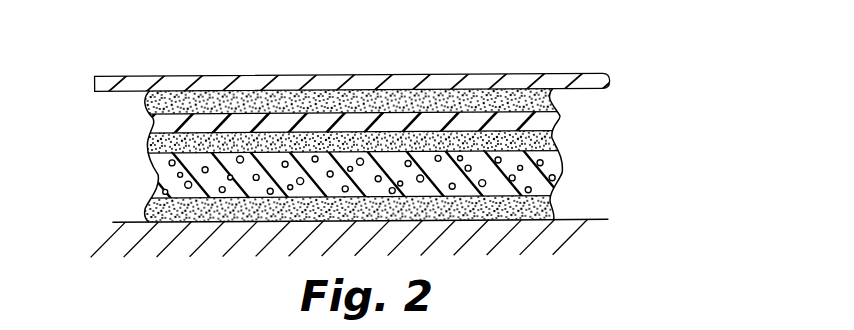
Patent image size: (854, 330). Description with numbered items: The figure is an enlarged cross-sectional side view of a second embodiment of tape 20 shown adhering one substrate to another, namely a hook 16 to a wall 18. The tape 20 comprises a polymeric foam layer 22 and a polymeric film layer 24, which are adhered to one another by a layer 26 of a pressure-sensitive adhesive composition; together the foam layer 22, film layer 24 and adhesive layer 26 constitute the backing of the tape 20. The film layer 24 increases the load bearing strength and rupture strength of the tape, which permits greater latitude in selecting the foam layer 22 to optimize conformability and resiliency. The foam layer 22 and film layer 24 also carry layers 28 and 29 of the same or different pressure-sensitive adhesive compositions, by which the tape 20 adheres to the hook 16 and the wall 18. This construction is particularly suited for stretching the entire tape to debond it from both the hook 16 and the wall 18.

The hook 16 is at (418, 82).
The wall 18 is at (135, 222).
The tape 20 is at (636, 104).
The polymeric foam layer 22 is at (557, 170).
The polymeric film layer 24 is at (155, 122).
The pressure-sensitive adhesive layer 26 is at (148, 148).
The pressure-sensitive adhesive layer 28 is at (552, 208).
The pressure-sensitive adhesive layer 29 is at (145, 105).